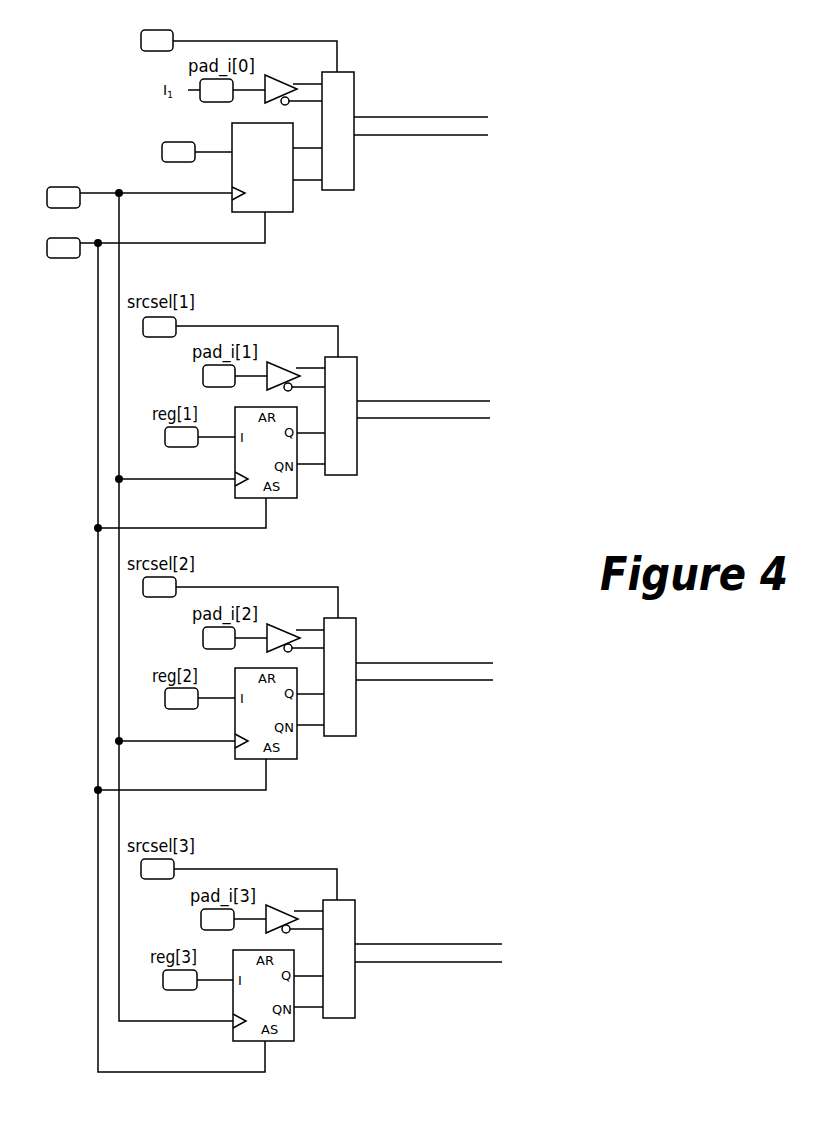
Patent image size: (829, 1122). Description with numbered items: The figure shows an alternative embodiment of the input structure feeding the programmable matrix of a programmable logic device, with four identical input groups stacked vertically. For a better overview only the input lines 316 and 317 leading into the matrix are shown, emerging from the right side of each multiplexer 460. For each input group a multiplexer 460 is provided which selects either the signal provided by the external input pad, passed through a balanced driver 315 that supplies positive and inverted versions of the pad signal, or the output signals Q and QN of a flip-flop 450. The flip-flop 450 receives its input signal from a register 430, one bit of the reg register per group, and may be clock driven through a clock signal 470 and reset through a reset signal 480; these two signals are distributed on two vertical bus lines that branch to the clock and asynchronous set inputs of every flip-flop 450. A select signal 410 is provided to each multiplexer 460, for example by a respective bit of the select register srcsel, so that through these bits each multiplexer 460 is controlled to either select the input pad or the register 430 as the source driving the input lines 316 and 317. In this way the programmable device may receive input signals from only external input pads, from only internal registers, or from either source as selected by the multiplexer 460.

The select signal 410 is at (142, 38).
The register reg[0...3] 430 is at (162, 152).
The clock signal 470 is at (65, 192).
The reset signal 480 is at (72, 250).
The balanced driver 315 is at (269, 80).
The input line 316 is at (463, 113).
The input line 317 is at (460, 137).
The flip-flop 450 is at (292, 190).
The multiplexer 460 is at (343, 93).